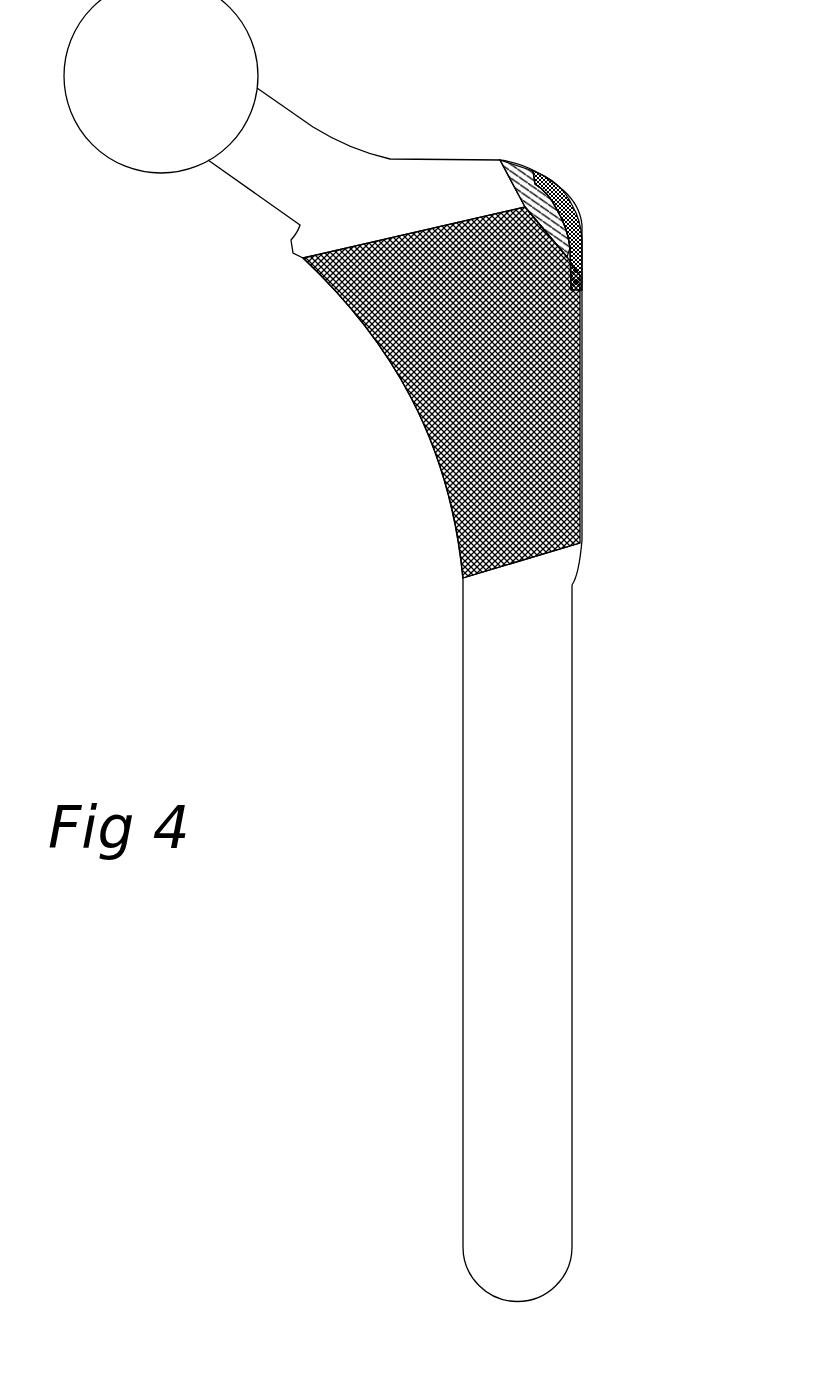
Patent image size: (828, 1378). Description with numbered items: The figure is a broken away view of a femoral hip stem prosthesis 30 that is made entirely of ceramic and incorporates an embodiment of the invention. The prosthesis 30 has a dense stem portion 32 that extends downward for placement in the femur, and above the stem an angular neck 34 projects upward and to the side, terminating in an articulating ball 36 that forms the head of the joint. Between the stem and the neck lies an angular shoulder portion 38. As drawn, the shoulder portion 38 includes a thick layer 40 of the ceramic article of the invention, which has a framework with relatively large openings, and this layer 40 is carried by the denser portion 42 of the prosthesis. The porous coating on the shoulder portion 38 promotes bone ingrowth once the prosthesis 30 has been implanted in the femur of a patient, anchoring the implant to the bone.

The femoral hip stem prosthesis 30 is at (249, 480).
The dense stem portion 32 is at (463, 938).
The angular neck 34 is at (305, 118).
The articulating ball 36 is at (93, 143).
The angular shoulder portion 38 is at (582, 355).
The thick layer 40 is at (582, 217).
The denser portion 42 is at (533, 183).